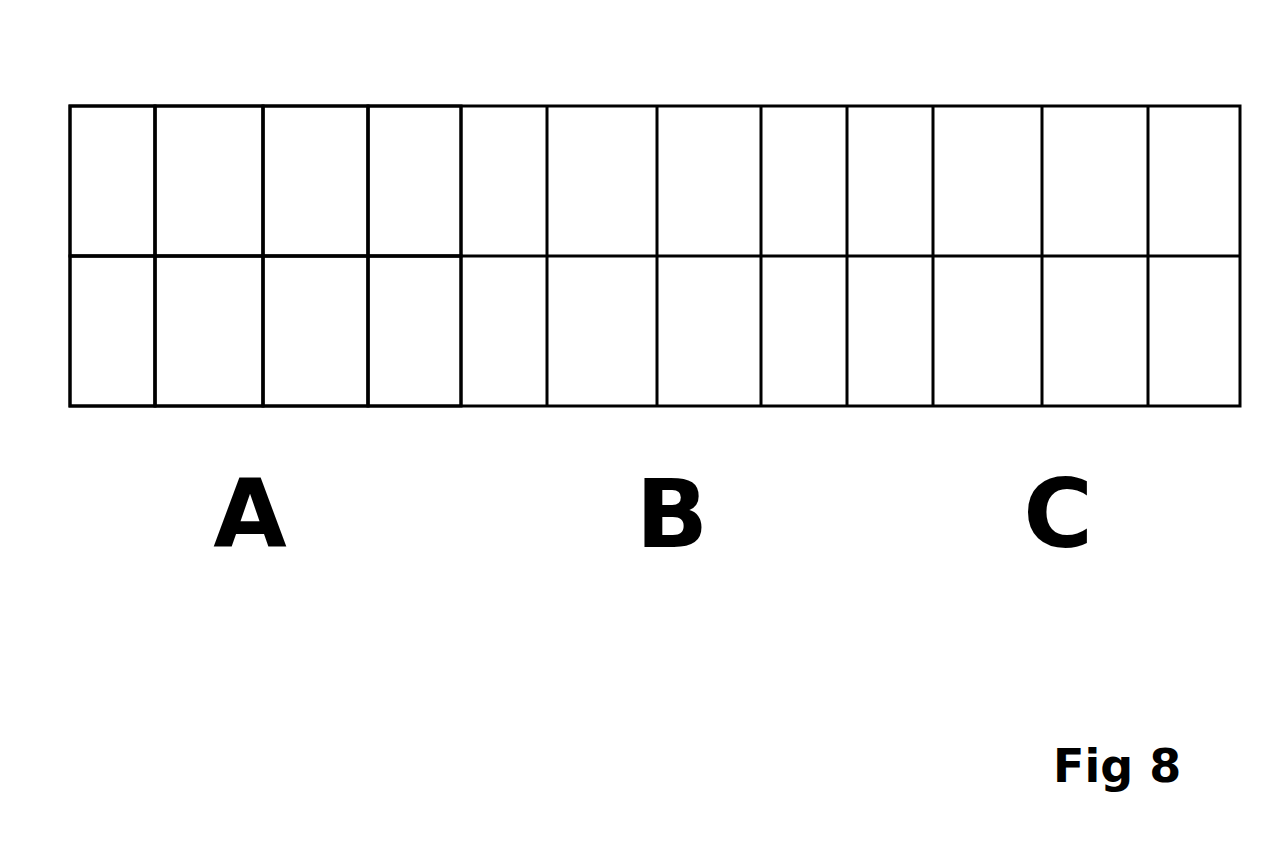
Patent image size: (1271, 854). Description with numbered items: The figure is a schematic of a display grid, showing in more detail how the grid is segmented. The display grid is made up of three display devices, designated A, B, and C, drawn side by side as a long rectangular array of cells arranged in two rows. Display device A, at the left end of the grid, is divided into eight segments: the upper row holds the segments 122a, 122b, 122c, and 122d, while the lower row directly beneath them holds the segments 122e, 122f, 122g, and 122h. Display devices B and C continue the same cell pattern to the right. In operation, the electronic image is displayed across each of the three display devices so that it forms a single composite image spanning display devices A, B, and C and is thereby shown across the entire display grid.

The segment 122a is at (92, 106).
The segment 122b is at (179, 106).
The segment 122c is at (285, 106).
The segment 122d is at (382, 106).
The segment 122e is at (75, 406).
The segment 122f is at (165, 406).
The segment 122g is at (263, 406).
The segment 122h is at (378, 406).